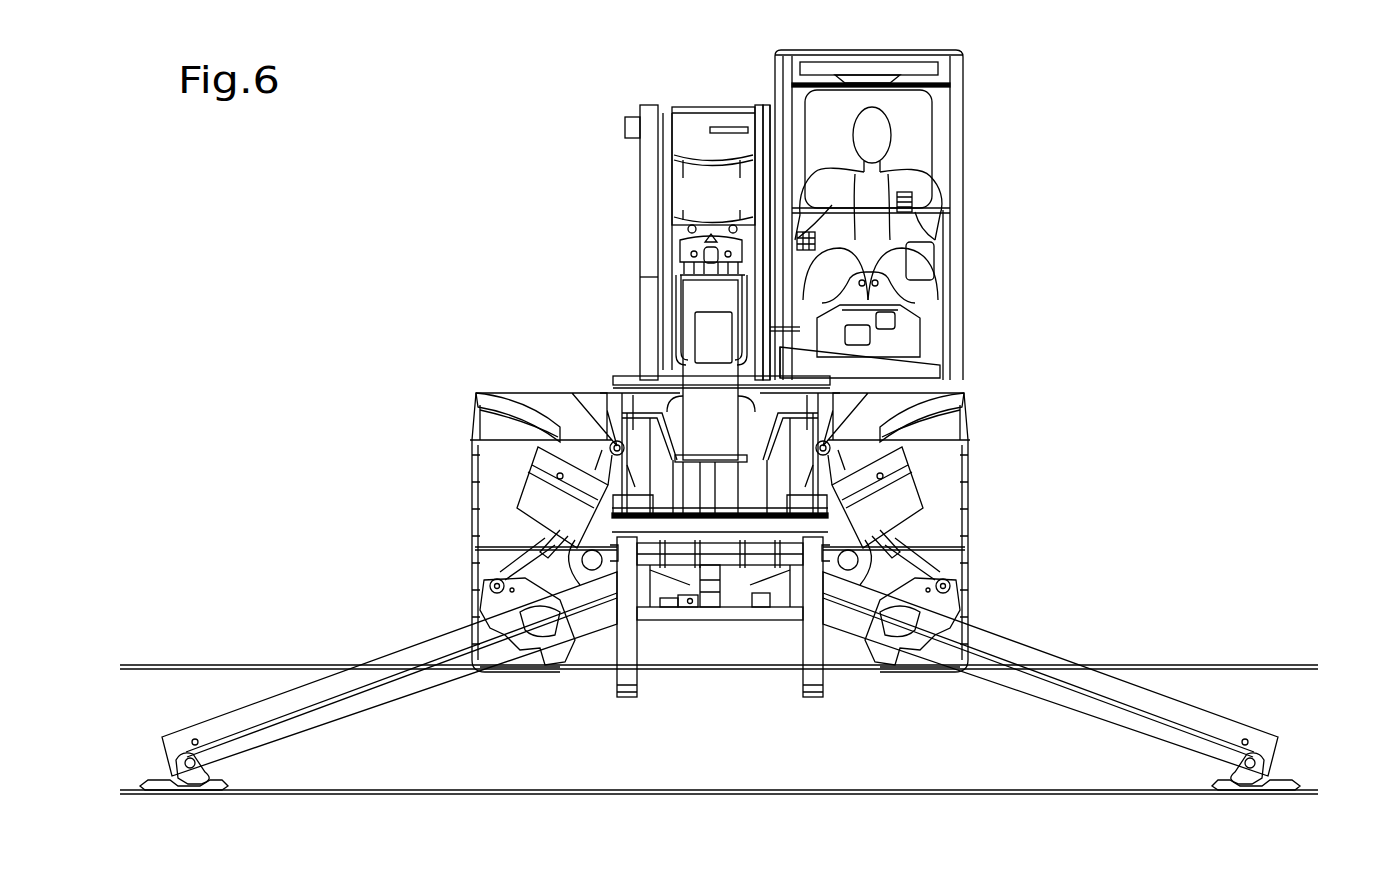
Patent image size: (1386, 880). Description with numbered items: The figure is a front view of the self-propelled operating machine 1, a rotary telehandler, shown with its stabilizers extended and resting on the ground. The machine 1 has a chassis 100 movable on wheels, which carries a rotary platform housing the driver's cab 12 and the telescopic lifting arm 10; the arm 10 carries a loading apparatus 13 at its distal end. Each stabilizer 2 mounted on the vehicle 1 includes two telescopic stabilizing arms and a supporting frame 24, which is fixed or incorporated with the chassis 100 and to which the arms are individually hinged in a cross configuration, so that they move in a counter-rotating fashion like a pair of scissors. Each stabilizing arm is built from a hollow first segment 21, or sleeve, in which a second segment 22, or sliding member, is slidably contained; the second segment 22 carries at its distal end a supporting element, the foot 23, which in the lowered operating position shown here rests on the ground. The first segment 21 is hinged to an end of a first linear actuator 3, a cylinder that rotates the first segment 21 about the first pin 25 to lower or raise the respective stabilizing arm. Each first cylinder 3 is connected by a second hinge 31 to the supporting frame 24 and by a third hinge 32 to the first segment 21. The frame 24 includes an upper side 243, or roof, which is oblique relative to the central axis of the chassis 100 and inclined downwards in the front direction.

The self-propelled operating machine 1 is at (1160, 226).
The stabilizer 2 is at (464, 712).
The first linear actuator 3 is at (557, 518).
The telescopic lifting arm 10 is at (705, 385).
The driver's cab 12 is at (960, 172).
The loading apparatus 13 is at (735, 582).
The first segment 21 is at (583, 633).
The second segment 22 is at (418, 655).
The foot 23 is at (165, 782).
The supporting frame 24 is at (612, 446).
The first pin 25 is at (582, 560).
The second hinge 31 is at (617, 442).
The third hinge 32 is at (489, 588).
The chassis 100 is at (848, 412).
The upper side 243 is at (633, 400).